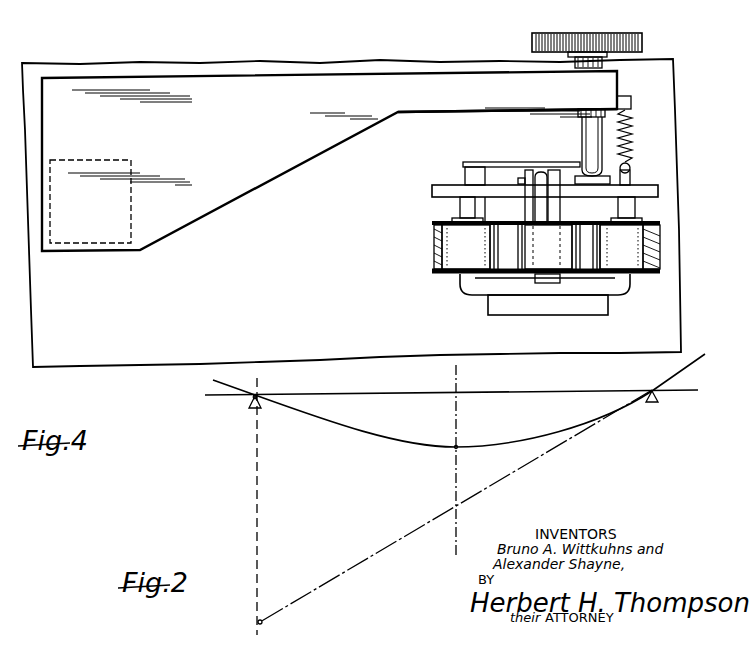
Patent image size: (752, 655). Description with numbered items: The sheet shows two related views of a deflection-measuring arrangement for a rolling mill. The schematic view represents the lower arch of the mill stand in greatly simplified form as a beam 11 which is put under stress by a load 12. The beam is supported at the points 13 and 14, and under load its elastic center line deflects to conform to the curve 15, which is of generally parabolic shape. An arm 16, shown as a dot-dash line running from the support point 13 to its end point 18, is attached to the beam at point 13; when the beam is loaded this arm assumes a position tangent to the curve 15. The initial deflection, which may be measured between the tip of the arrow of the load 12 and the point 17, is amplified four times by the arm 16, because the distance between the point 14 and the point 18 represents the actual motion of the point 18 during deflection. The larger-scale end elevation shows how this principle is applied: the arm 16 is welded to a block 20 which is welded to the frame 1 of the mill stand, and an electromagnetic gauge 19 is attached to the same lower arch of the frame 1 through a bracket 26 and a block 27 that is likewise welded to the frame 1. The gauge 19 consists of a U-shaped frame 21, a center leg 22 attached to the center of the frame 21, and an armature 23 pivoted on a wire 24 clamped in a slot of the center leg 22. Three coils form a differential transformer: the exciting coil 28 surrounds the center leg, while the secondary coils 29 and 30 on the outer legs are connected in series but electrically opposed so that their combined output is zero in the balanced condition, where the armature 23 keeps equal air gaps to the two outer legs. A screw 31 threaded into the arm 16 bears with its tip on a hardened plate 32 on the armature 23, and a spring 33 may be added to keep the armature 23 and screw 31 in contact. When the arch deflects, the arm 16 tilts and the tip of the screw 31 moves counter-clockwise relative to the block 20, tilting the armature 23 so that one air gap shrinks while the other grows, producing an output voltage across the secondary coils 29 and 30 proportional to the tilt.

In FIG. 4, the rolling mill stand frame 1 is at (329, 162).
In FIG. 2, the beam 11 is at (479, 390).
In FIG. 2, the load 12 is at (452, 388).
In FIG. 2, the support point 13 is at (656, 393).
In FIG. 2, the support point 14 is at (250, 401).
In FIG. 2, the deflection curve 15 is at (562, 424).
In FIG. 4, the arm 16 is at (435, 115).
In FIG. 2, the arm 16 is at (393, 545).
In FIG. 2, the deflection point 17 is at (458, 450).
In FIG. 2, the arm end point 18 is at (245, 624).
In FIG. 4, the electromagnetic gauge 19 is at (455, 142).
In FIG. 4, the block 20 is at (80, 243).
In FIG. 4, the U-shaped frame 21 is at (462, 290).
In FIG. 4, the center leg 22 is at (548, 247).
In FIG. 4, the armature 23 is at (440, 185).
In FIG. 4, the wire 24 is at (539, 171).
In FIG. 4, the bracket 26 is at (490, 306).
In FIG. 4, the block 27 is at (477, 166).
In FIG. 4, the exciting coil 28 is at (535, 256).
In FIG. 4, the secondary coil 29 is at (466, 247).
In FIG. 4, the secondary coil 30 is at (621, 247).
In FIG. 4, the screw 31 is at (643, 36).
In FIG. 4, the hardened plate 32 is at (584, 165).
In FIG. 4, the spring 33 is at (631, 136).